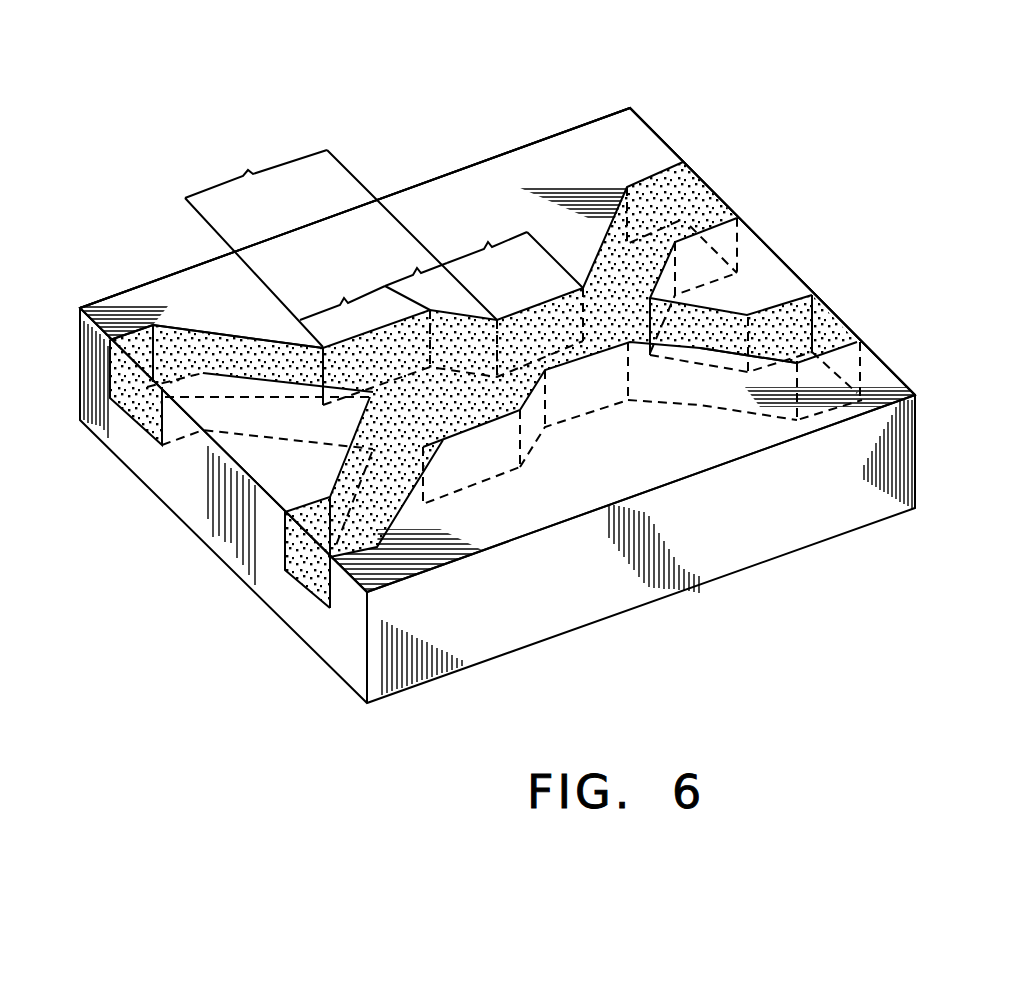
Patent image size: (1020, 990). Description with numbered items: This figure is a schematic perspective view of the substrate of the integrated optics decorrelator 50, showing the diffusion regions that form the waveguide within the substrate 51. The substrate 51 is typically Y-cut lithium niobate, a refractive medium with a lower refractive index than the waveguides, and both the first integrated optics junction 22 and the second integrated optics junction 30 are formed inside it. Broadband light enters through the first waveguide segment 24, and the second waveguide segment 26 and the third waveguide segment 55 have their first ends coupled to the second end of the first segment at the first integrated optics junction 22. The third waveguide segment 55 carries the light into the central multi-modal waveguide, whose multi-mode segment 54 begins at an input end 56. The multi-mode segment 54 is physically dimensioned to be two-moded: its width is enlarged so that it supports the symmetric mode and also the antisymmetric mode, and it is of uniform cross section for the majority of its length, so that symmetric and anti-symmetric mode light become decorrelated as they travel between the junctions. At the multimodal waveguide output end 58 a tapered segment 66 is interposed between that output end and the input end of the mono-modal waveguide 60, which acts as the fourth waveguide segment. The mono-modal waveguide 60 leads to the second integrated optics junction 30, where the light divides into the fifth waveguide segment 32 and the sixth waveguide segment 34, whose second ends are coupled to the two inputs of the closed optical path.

The integrated optics decorrelator 50 is at (489, 128).
The substrate 51 is at (578, 618).
The multimodal waveguide output end 58 is at (622, 480).
The first integrated optics junction 22 is at (358, 401).
The first waveguide segment 24 is at (170, 348).
The second waveguide segment 26 is at (320, 532).
The fifth waveguide segment 32 is at (692, 200).
The second integrated optics junction 30 is at (680, 280).
The sixth waveguide segment 34 is at (812, 332).
The third waveguide segment 55 is at (341, 236).
The multi-mode segment 54 is at (342, 292).
The tapered segment 66 is at (416, 273).
The mono-modal waveguide 60 is at (515, 249).
The input end 56 is at (318, 340).